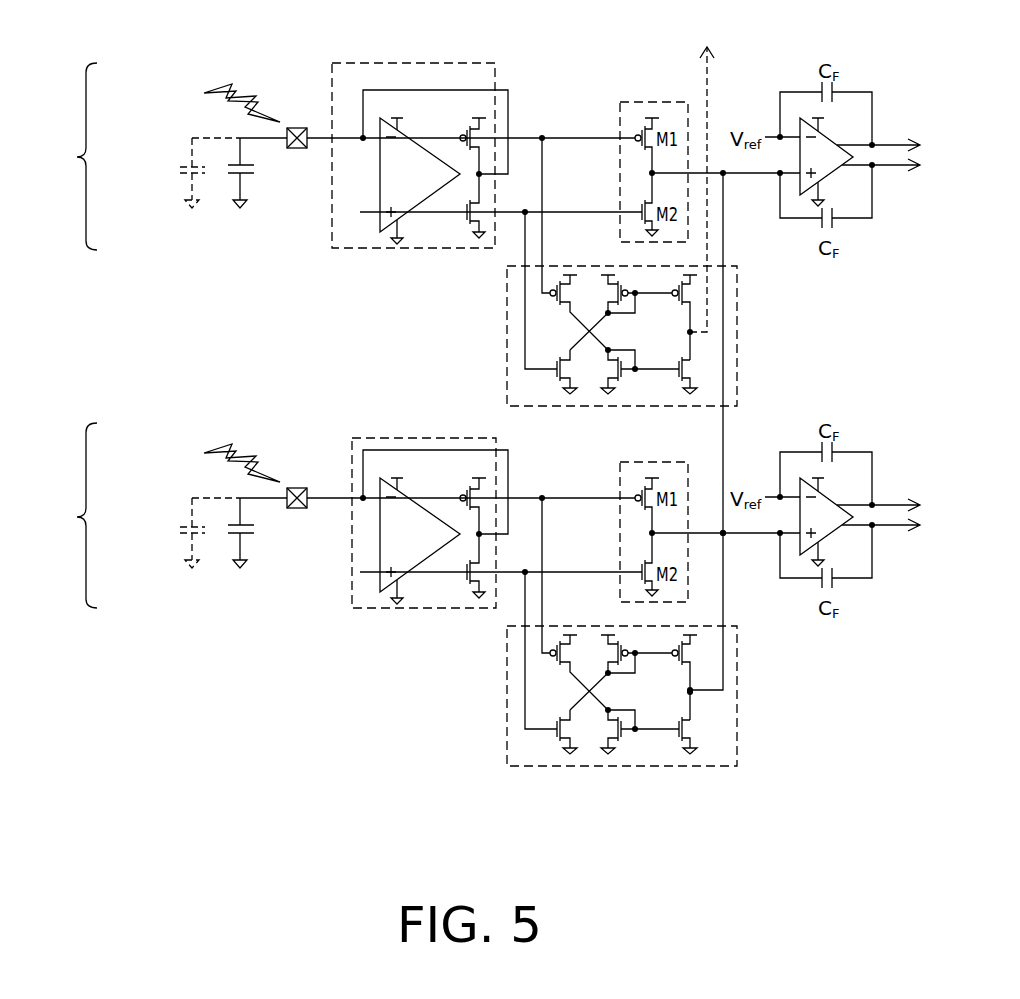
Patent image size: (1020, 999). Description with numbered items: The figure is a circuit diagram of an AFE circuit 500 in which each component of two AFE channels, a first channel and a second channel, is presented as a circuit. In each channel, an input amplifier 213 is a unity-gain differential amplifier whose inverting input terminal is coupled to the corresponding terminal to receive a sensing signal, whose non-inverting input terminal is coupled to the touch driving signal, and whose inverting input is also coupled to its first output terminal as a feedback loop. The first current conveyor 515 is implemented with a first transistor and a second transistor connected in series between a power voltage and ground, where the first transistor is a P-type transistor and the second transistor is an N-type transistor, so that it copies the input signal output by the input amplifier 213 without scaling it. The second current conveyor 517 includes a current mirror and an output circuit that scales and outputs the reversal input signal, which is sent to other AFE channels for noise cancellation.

The AFE circuit 500 is at (142, 785).
The input amplifier 213 is at (412, 63).
The first current conveyor 515 is at (660, 100).
The second current conveyor 517 is at (740, 337).